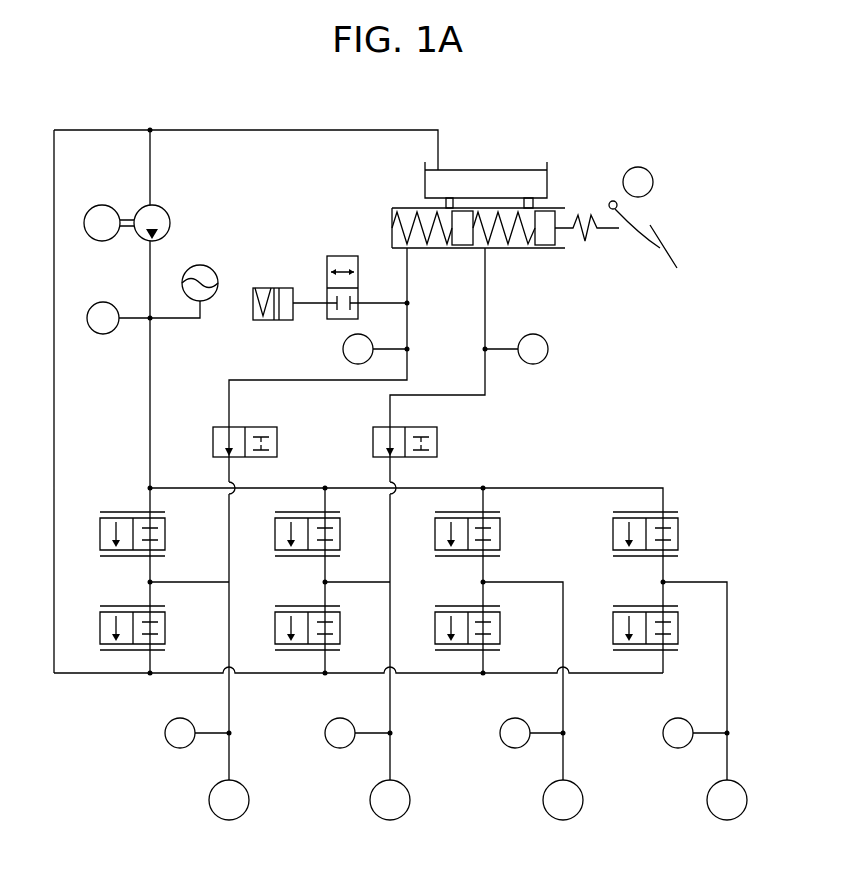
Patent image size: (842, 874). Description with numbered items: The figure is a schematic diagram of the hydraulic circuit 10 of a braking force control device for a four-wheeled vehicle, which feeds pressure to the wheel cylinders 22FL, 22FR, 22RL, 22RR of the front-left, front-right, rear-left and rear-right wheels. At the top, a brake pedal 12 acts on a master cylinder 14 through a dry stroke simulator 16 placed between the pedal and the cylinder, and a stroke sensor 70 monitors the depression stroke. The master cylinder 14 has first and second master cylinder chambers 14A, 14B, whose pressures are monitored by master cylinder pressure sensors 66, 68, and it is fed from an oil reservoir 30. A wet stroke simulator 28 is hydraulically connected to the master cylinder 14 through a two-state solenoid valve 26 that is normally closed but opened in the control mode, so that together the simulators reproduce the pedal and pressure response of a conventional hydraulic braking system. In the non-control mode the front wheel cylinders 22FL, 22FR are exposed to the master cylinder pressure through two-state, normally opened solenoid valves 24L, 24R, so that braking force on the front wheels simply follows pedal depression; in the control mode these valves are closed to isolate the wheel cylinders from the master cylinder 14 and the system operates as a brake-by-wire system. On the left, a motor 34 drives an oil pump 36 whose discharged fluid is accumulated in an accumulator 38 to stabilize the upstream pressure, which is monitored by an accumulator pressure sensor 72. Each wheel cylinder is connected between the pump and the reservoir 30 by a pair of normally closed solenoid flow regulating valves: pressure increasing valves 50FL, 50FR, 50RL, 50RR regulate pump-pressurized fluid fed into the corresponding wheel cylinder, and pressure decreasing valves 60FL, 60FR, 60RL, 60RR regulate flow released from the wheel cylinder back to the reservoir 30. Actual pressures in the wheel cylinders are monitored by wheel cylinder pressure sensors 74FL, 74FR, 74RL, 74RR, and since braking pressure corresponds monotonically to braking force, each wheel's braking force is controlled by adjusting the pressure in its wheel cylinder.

The hydraulic circuit 10 is at (560, 120).
The brake pedal 12 is at (675, 250).
The master cylinder 14 is at (413, 208).
The first master cylinder chamber 14A is at (425, 243).
The second master cylinder chamber 14B is at (507, 243).
The dry stroke simulator 16 is at (597, 232).
The front-left wheel cylinder 22FL is at (209, 805).
The front-right wheel cylinder 22FR is at (370, 805).
The rear-left wheel cylinder 22RL is at (543, 805).
The rear-right wheel cylinder 22RR is at (707, 805).
The normally opened solenoid valve 24L is at (213, 438).
The normally opened solenoid valve 24R is at (373, 438).
The solenoid valve 26 is at (340, 256).
The wet stroke simulator 28 is at (262, 320).
The oil reservoir 30 is at (485, 178).
The motor 34 is at (106, 205).
The oil pump 36 is at (170, 214).
The accumulator 38 is at (207, 268).
The pressure increasing valve 50FL is at (100, 528).
The pressure increasing valve 50FR is at (303, 516).
The pressure increasing valve 50RL is at (462, 516).
The pressure increasing valve 50RR is at (680, 541).
The pressure decreasing valve 60FL is at (100, 621).
The pressure decreasing valve 60FR is at (275, 621).
The pressure decreasing valve 60RL is at (435, 621).
The pressure decreasing valve 60RR is at (613, 621).
The master cylinder pressure sensor 66 is at (342, 349).
The master cylinder pressure sensor 68 is at (548, 349).
The stroke sensor 70 is at (653, 182).
The accumulator pressure sensor 72 is at (103, 335).
The wheel cylinder pressure sensor 74FL is at (165, 741).
The wheel cylinder pressure sensor 74FR is at (325, 741).
The wheel cylinder pressure sensor 74RL is at (500, 741).
The wheel cylinder pressure sensor 74RR is at (663, 741).